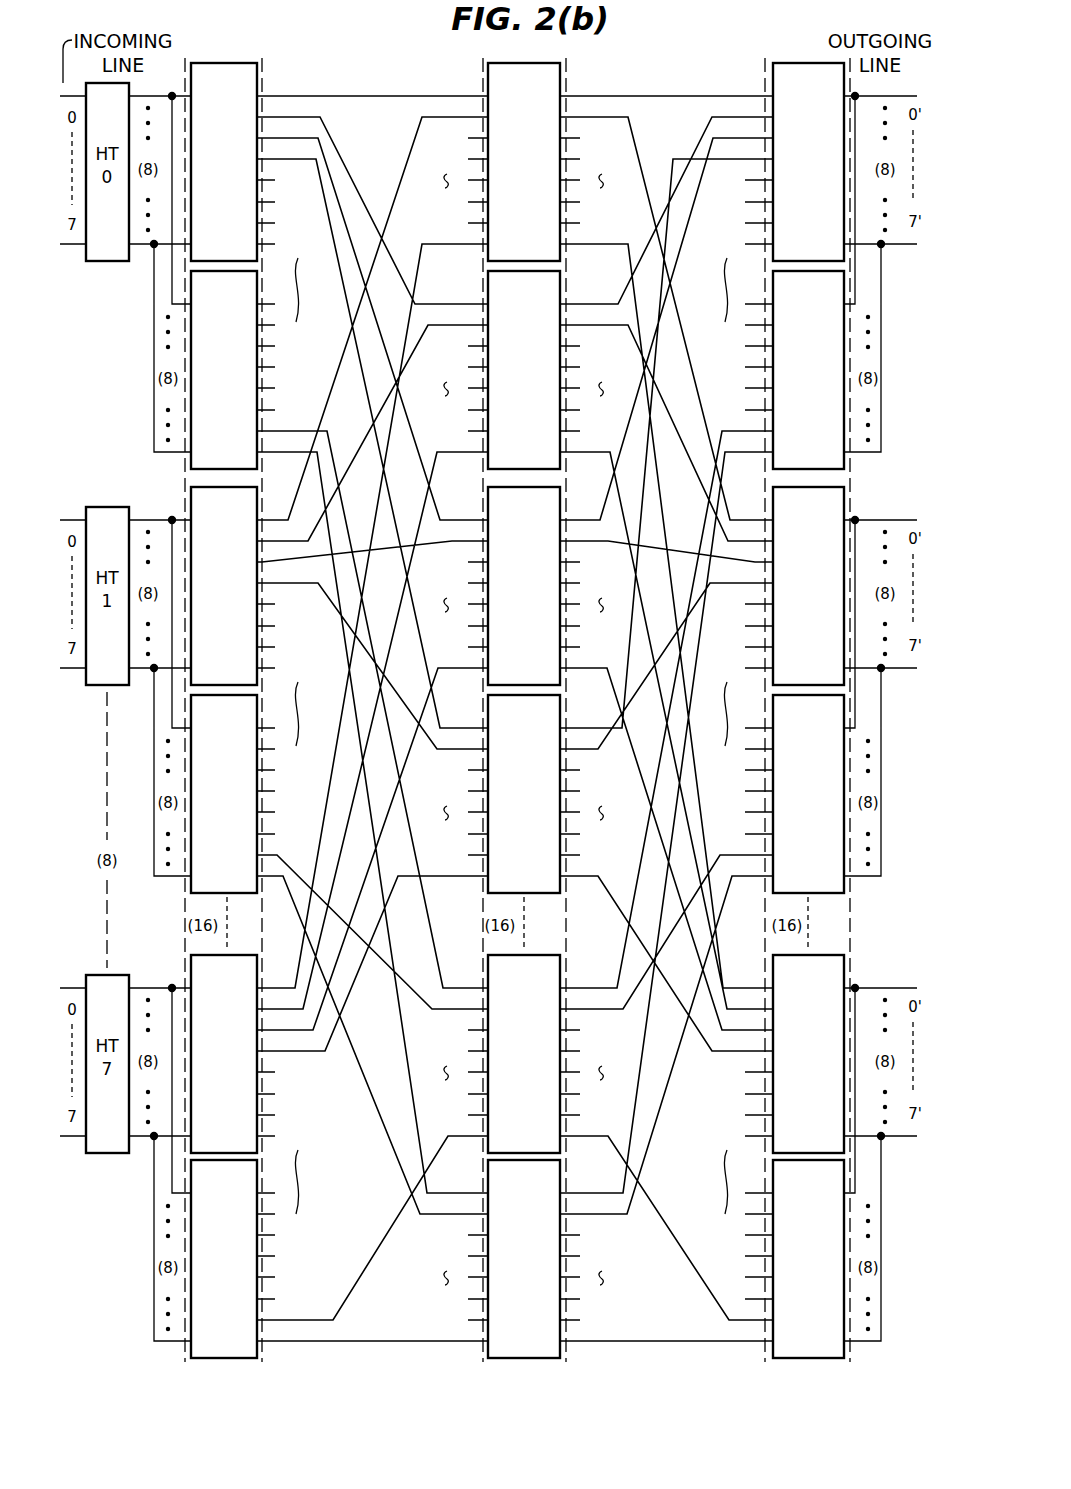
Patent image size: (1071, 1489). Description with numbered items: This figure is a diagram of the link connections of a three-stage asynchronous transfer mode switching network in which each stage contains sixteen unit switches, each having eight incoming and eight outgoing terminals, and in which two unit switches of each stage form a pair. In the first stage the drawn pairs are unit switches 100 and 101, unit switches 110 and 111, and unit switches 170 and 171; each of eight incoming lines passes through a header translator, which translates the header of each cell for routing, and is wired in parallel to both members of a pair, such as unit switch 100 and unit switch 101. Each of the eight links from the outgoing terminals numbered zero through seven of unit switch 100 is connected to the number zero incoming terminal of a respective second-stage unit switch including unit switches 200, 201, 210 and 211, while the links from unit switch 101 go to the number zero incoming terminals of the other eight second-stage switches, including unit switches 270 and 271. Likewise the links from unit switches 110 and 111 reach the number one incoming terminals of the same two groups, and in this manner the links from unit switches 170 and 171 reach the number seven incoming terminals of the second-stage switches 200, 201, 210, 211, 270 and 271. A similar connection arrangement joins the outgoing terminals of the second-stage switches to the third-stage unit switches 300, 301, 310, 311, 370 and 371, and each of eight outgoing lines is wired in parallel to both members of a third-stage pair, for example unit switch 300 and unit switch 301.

The unit switch 100 is at (207, 85).
The unit switch 101 is at (207, 293).
The unit switch 110 is at (207, 509).
The unit switch 111 is at (207, 717).
The unit switch 170 is at (207, 977).
The unit switch 171 is at (207, 1182).
The unit switch 200 is at (507, 85).
The unit switch 201 is at (507, 293).
The unit switch 210 is at (507, 509).
The unit switch 211 is at (507, 717).
The unit switch 270 is at (507, 977).
The unit switch 271 is at (507, 1182).
The unit switch 300 is at (791, 85).
The unit switch 301 is at (791, 293).
The unit switch 310 is at (791, 509).
The unit switch 311 is at (791, 717).
The unit switch 370 is at (791, 977).
The unit switch 371 is at (791, 1182).